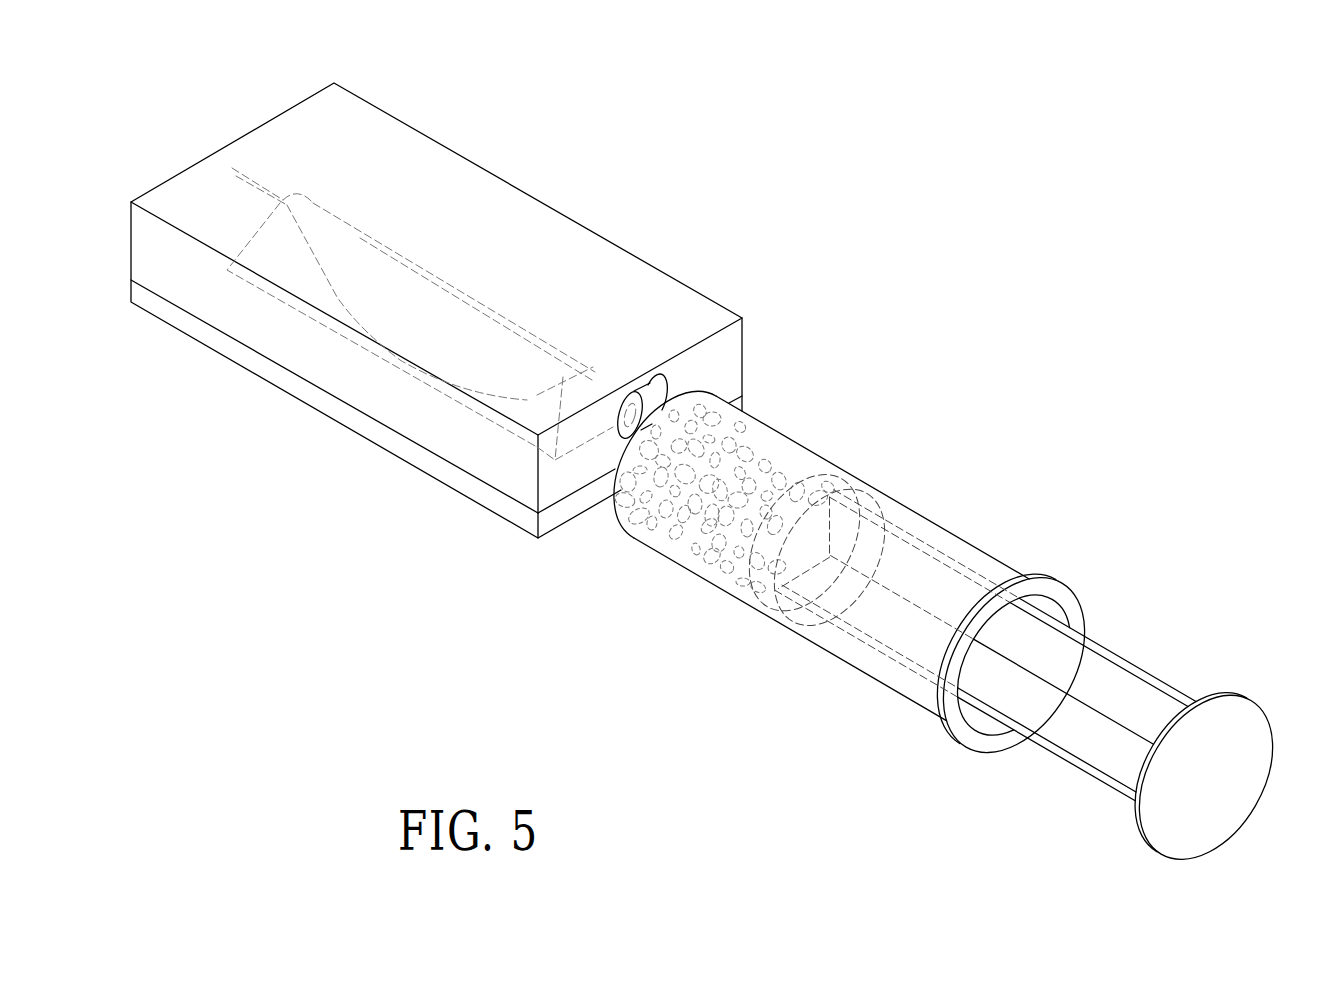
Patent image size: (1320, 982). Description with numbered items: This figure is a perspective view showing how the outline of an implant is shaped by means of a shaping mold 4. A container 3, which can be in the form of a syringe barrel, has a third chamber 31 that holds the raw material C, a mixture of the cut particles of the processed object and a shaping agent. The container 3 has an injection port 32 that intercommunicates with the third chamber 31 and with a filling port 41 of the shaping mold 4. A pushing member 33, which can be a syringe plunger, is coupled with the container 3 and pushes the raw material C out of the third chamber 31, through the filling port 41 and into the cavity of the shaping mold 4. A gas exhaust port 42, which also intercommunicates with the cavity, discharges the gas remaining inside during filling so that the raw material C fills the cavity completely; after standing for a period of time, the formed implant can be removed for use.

The container 3 is at (956, 636).
The third chamber 31 is at (883, 665).
The injection port 32 is at (590, 380).
The pushing member 33 is at (1232, 727).
The shaping mold 4 is at (553, 230).
The filling port 41 is at (696, 303).
The gas exhaust port 42 is at (232, 170).
The raw material C is at (728, 567).